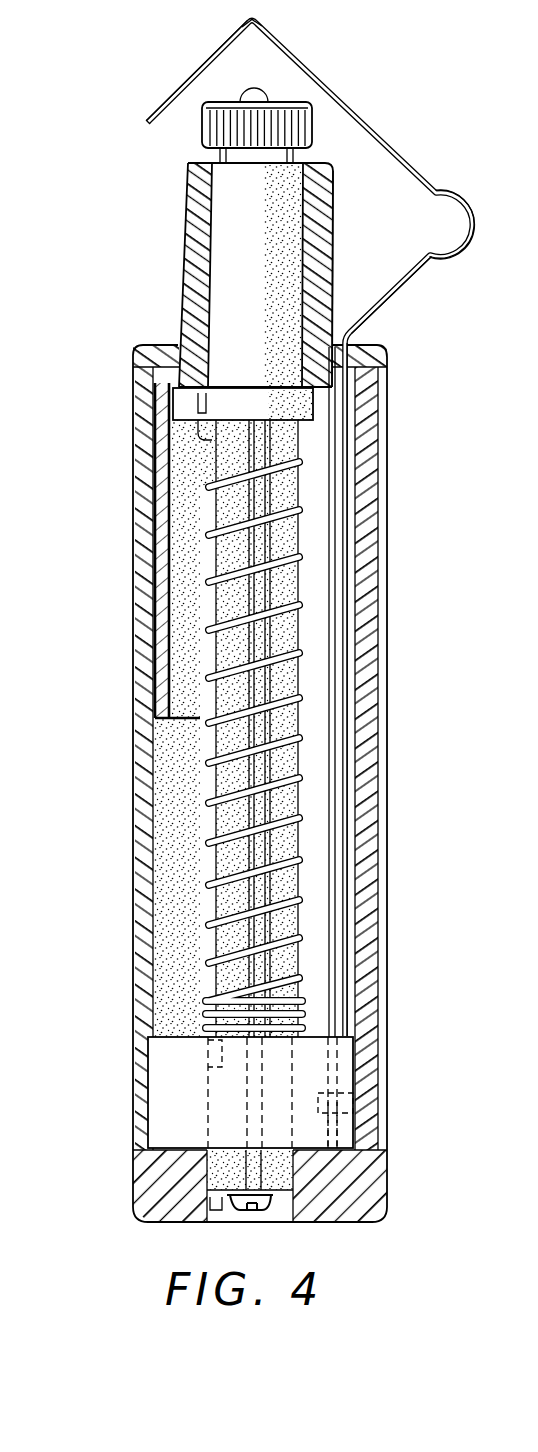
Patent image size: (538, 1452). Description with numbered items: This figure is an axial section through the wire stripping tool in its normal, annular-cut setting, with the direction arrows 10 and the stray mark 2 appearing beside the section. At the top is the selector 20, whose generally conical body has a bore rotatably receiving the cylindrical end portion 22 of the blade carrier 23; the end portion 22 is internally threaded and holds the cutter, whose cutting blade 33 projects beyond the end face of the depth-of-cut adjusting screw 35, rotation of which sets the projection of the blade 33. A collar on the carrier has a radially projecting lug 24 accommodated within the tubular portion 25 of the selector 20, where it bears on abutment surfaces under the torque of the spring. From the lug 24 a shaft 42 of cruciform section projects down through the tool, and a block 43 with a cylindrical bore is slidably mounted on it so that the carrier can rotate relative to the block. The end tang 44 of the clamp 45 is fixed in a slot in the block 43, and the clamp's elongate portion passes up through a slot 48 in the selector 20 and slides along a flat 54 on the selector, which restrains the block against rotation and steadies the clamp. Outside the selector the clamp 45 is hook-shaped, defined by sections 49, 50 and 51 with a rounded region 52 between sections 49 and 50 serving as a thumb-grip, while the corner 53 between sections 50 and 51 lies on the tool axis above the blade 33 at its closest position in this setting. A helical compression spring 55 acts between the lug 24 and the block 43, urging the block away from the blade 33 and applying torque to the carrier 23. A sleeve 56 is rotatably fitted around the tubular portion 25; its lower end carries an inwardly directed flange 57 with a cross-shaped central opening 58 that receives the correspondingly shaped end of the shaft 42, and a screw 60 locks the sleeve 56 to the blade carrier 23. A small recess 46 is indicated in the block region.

The direction of insertion 10 is at (63, 492).
The selector 20 is at (197, 260).
The cylindrical end portion 22 is at (237, 333).
The blade carrier 23 is at (213, 506).
The lug 24 is at (187, 402).
The tubular portion 25 is at (160, 653).
The cutting blade 33 is at (256, 90).
The depth-of-cut adjusting screw 35 is at (212, 125).
The shaft 42 is at (292, 757).
The block 43 is at (317, 1077).
The end tang 44 is at (340, 1113).
The clamp 45 is at (323, 527).
The recess 46 is at (355, 1073).
The slot 48 is at (333, 368).
The section 49 is at (378, 283).
The section 50 is at (323, 527).
The section 51 is at (187, 90).
The rounded region 52 is at (468, 217).
The corner 53 is at (270, 18).
The flat 54 is at (333, 219).
The helical compression spring 55 is at (290, 517).
The sleeve 56 is at (135, 855).
The inwardly directed flange 57 is at (147, 1186).
The cross-shaped central opening 58 is at (221, 1207).
The screw 60 is at (262, 1205).
The unlabeled 2 is at (530, 467).